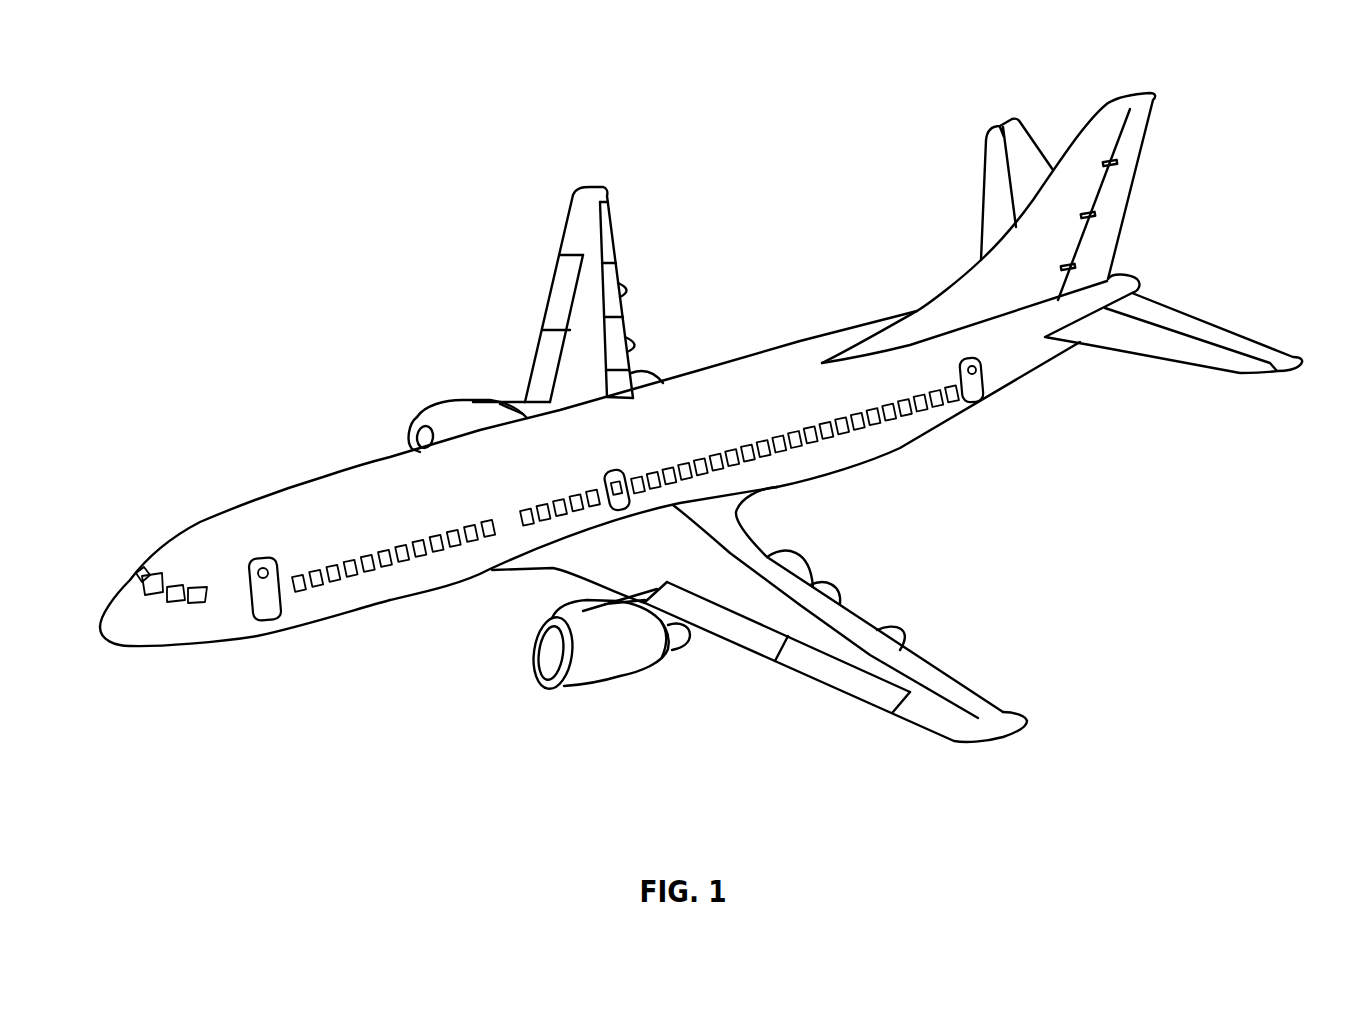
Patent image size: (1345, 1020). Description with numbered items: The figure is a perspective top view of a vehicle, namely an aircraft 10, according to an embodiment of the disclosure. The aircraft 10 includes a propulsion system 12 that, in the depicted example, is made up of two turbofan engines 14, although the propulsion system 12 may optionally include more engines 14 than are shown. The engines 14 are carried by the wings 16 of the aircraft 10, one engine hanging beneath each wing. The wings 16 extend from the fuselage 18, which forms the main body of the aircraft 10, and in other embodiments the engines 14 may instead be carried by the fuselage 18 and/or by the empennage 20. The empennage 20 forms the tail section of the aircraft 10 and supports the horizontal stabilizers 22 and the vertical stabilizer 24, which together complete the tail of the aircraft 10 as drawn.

The aircraft 10 is at (378, 165).
The propulsion system 12 is at (505, 745).
The turbofan engines 14 is at (456, 403).
The wings 16 is at (592, 198).
The fuselage 18 is at (348, 597).
The empennage 20 is at (868, 303).
The horizontal stabilizers 22 is at (1016, 128).
The vertical stabilizer 24 is at (1115, 107).